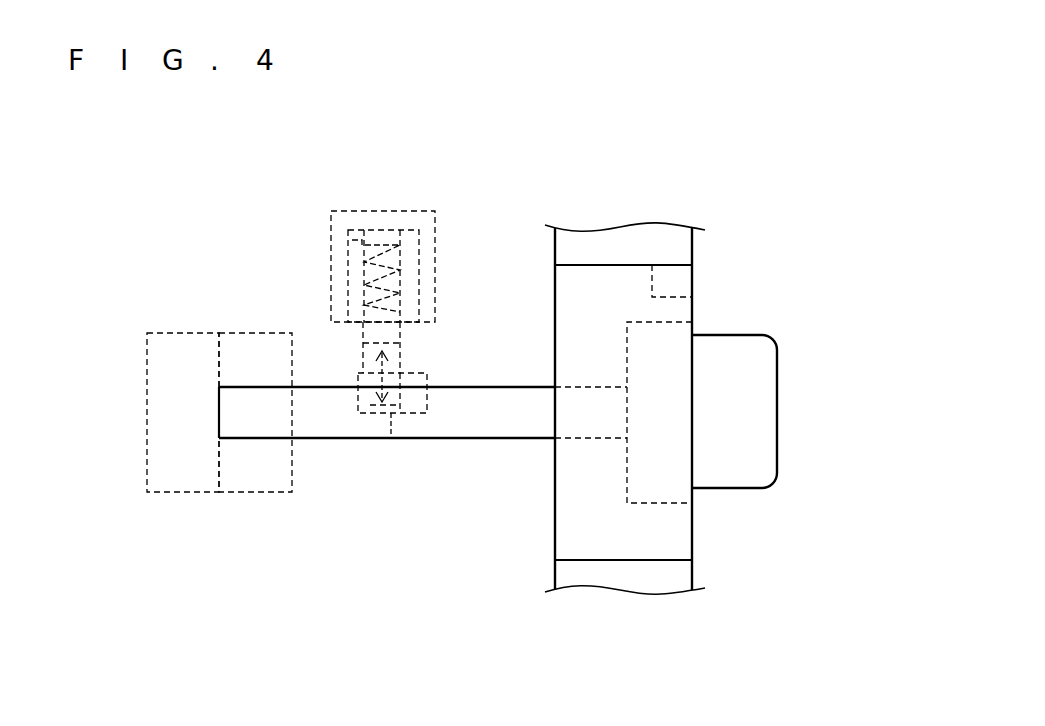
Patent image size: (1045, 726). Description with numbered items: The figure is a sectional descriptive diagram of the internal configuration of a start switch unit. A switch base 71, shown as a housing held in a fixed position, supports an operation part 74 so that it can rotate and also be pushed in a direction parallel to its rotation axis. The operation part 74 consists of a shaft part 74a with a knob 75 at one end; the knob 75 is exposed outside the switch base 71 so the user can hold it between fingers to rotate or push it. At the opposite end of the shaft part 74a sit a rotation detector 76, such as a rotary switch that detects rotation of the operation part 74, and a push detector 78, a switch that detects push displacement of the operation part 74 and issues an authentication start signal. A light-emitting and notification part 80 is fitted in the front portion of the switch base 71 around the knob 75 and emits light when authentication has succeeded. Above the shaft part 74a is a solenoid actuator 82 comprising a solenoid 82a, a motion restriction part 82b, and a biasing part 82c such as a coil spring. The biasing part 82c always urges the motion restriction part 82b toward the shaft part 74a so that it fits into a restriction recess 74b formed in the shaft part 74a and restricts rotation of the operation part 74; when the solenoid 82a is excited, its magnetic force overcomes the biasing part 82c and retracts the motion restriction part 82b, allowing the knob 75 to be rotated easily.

The switch base 71 is at (680, 538).
The operation part 74 is at (528, 402).
The shaft part 74a is at (478, 439).
The restriction recess 74b is at (392, 440).
The knob 75 is at (780, 405).
The rotation detector 76 is at (250, 493).
The push detector 78 is at (180, 493).
The light-emitting and notification part 80 is at (676, 300).
The solenoid actuator 82 is at (416, 268).
The solenoid 82a is at (437, 291).
The motion restriction part 82b is at (405, 338).
The biasing part 82c is at (440, 250).